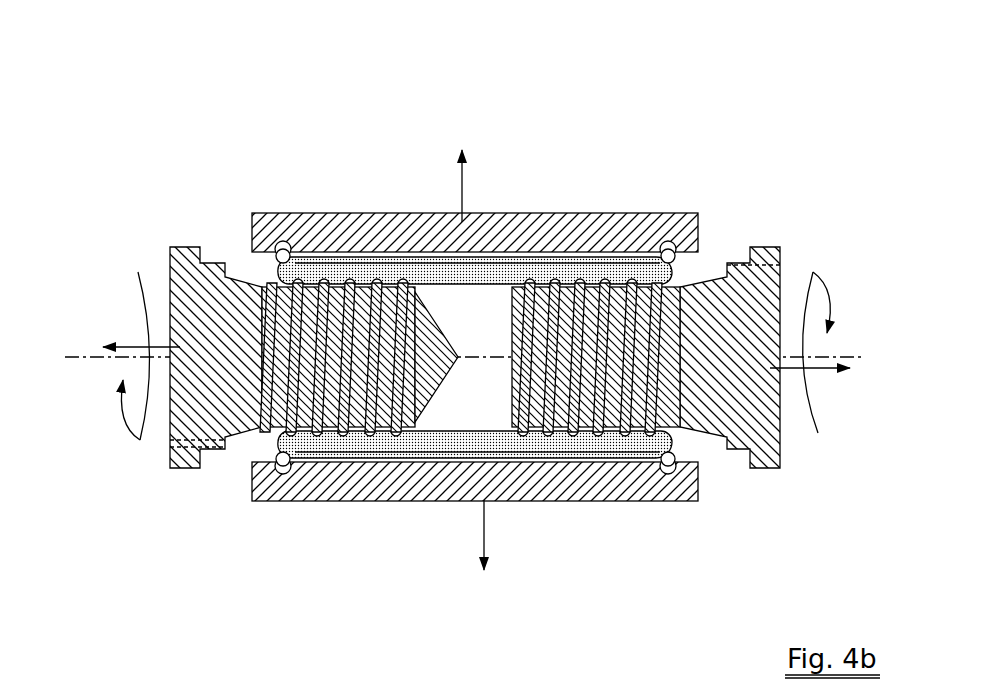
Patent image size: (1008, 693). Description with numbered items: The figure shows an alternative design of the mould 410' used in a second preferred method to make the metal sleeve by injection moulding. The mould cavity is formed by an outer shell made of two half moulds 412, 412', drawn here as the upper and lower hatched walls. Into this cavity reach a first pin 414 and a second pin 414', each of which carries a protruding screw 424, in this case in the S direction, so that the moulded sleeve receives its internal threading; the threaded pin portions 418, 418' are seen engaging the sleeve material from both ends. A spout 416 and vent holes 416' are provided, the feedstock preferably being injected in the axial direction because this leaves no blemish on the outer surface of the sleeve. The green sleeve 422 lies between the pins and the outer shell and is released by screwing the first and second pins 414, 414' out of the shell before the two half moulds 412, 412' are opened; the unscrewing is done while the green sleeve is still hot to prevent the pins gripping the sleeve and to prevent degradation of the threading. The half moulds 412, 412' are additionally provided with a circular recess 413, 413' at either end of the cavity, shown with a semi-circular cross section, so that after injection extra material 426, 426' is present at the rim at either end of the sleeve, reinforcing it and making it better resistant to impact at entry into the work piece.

The mould 410' is at (472, 302).
The half mould 412 is at (494, 188).
The half mould 412' is at (475, 518).
The circular recess 413 is at (720, 209).
The circular recess 413' is at (229, 209).
The first pin 414 is at (783, 357).
The second pin 414' is at (159, 357).
The spout 416 is at (805, 345).
The vent holes 416' is at (141, 366).
The threaded screw 418 is at (512, 428).
The threaded screw 418' is at (434, 278).
The green sleeve 422 is at (475, 204).
The protruding screw 424 is at (455, 499).
The extra material 426 is at (763, 513).
The extra material 426' is at (179, 513).